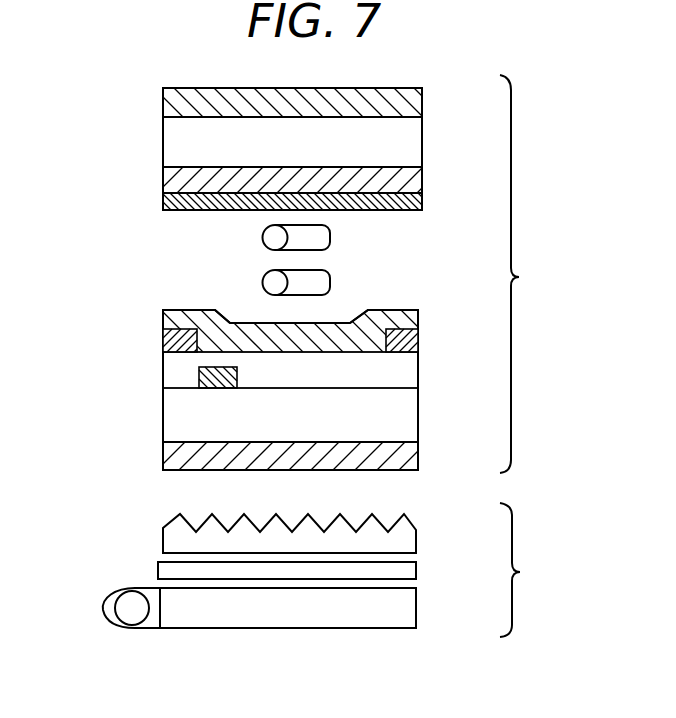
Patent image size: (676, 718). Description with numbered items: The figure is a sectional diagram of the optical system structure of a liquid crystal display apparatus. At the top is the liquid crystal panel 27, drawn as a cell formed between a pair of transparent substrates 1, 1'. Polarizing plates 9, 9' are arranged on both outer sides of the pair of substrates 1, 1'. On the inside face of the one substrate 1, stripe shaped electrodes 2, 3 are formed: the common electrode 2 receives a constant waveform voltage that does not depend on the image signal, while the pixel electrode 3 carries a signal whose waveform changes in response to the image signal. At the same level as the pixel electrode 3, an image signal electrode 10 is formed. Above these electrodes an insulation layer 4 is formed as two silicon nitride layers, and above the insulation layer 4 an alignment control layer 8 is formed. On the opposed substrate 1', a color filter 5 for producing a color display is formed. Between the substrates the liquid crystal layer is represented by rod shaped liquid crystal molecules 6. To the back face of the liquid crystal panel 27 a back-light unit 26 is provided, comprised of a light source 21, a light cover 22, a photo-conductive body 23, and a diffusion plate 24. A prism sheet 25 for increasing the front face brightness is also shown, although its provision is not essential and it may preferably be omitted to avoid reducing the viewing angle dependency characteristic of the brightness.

The polarizing plate 9' is at (266, 100).
The transparent substrate 1' is at (266, 141).
The color filter 5 is at (417, 175).
The insulation layer 4 is at (407, 368).
The alignment control layer 8 is at (417, 202).
The liquid crystal molecules 6 is at (270, 240).
The image signal electrode 10 is at (168, 332).
The pixel electrode 3 is at (407, 337).
The common electrode 2 is at (220, 378).
The transparent substrate 1 is at (267, 390).
The polarizing plate 9 is at (267, 458).
The liquid crystal panel 27 is at (533, 274).
The prism sheet 25 is at (408, 540).
The diffusion plate 24 is at (408, 572).
The photo-conductive body 23 is at (408, 608).
The light cover 22 is at (104, 601).
The light source 21 is at (129, 615).
The back-light unit 26 is at (534, 570).